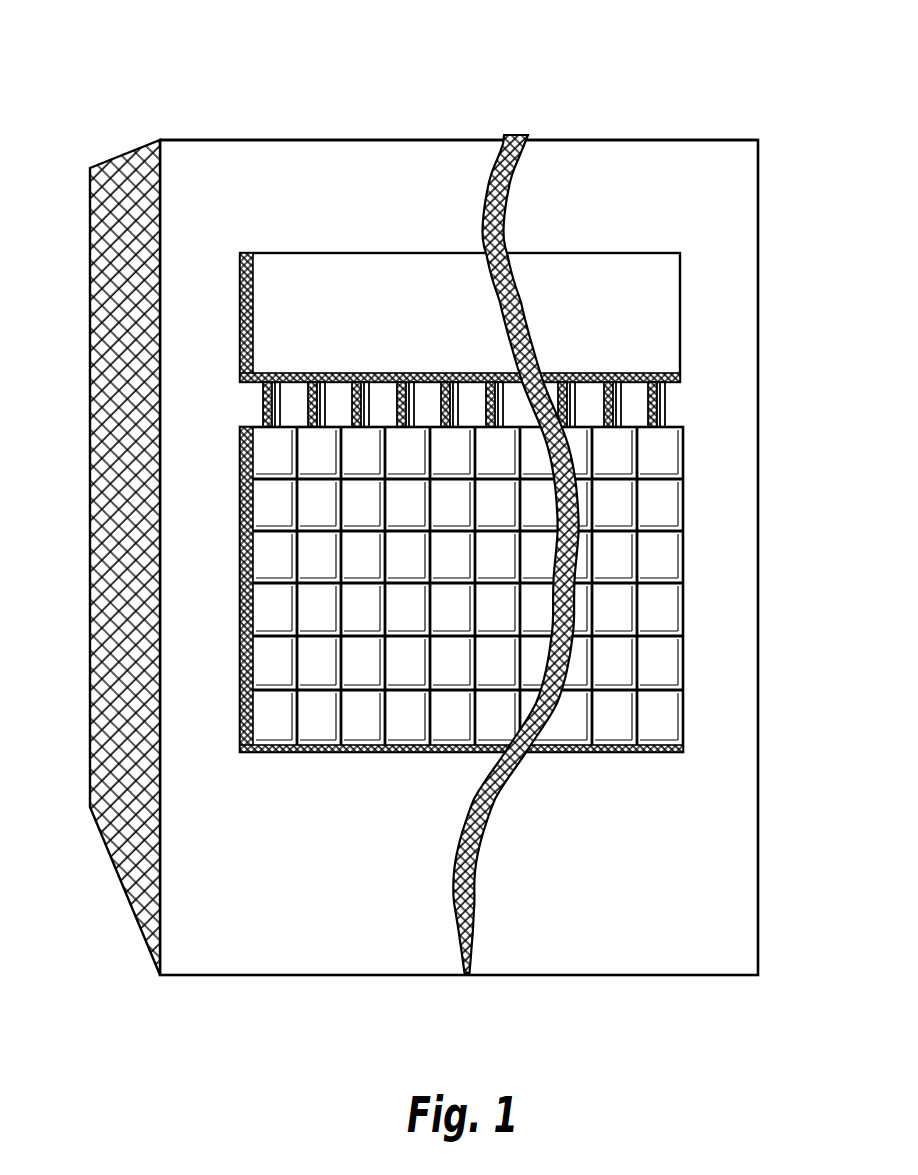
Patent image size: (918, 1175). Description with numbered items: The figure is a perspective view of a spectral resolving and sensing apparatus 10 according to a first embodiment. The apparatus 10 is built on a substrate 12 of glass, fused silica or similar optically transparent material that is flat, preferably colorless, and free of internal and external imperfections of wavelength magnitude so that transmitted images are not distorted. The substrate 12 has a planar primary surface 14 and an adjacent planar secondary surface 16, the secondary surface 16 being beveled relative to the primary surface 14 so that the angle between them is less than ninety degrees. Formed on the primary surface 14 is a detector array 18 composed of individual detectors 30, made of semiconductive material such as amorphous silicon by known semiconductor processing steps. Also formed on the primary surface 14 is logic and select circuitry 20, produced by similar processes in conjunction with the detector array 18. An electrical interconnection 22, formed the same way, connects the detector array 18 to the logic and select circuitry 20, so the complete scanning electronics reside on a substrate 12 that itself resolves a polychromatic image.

The spectral resolving and sensing apparatus 10 is at (134, 84).
The substrate 12 is at (428, 137).
The primary surface 14 is at (703, 192).
The secondary surface 16 is at (134, 924).
The detector array 18 is at (683, 608).
The logic and select circuitry 20 is at (660, 298).
The electrical interconnection 22 is at (226, 375).
The individual detectors 30 is at (662, 553).